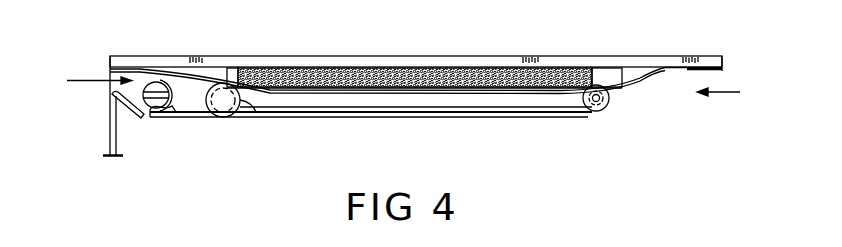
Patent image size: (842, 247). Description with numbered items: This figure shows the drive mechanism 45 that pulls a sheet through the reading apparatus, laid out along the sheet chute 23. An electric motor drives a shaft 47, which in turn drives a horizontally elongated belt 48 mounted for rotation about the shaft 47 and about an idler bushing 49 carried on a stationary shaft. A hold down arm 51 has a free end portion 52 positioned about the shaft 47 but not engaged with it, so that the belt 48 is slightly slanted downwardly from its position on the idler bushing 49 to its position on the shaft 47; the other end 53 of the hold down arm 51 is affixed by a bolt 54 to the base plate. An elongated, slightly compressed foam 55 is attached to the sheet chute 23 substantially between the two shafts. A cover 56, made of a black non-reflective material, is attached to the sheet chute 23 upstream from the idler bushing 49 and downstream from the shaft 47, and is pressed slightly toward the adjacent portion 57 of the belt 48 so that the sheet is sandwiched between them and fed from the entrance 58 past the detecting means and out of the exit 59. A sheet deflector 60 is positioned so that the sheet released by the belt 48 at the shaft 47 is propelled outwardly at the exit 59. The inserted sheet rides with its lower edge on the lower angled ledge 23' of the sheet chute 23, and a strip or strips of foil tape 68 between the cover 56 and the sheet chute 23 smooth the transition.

The sheet chute 23 is at (416, 47).
The lower angled ledge 23' is at (86, 61).
The drive mechanism 45 is at (283, 117).
The shaft 47 is at (233, 118).
The belt 48 is at (364, 118).
The idler bushing 49 is at (609, 107).
The hold down arm 51 is at (190, 118).
The free end portion 52 is at (248, 99).
The other end 53 is at (167, 118).
The bolt 54 is at (158, 88).
The foam 55 is at (377, 64).
The cover 56 is at (627, 67).
The adjacent portion of belt 57 is at (497, 89).
The entrance 58 is at (736, 94).
The exit 59 is at (82, 82).
The sheet deflector 60 is at (108, 86).
The foil tape 68 is at (690, 71).